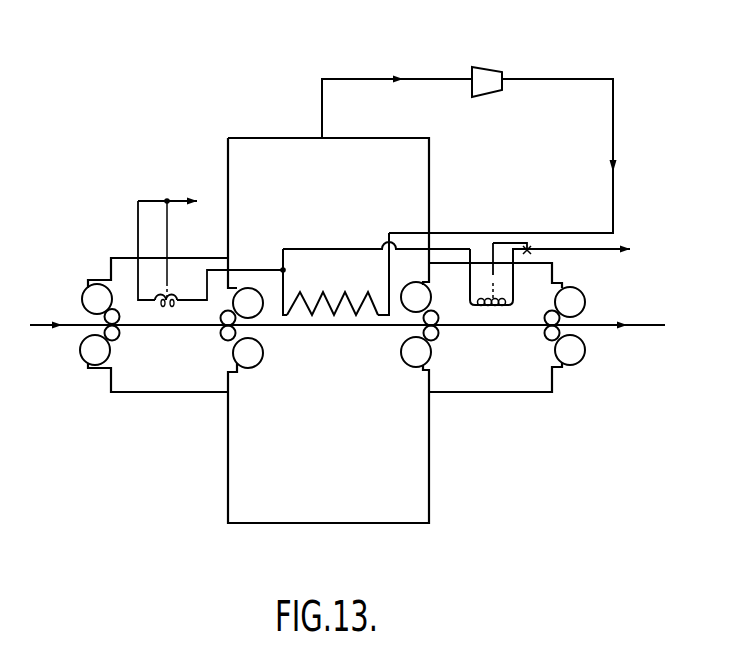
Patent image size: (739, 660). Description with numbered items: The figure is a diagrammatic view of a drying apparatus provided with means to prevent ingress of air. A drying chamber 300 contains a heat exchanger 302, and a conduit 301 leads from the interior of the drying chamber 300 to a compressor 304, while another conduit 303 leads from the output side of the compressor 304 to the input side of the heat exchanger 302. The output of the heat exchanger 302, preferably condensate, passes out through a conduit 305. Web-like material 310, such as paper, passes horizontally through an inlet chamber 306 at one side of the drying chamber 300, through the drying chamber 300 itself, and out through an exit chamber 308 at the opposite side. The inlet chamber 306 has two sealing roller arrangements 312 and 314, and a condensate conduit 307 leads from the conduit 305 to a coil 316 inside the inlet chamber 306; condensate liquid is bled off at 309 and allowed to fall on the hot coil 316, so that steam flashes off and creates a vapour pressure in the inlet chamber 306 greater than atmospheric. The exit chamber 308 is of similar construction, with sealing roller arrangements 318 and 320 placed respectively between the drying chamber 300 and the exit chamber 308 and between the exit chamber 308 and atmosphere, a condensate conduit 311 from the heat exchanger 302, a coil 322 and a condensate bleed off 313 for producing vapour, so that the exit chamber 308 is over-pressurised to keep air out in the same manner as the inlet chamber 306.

The drying chamber 300 is at (430, 192).
The conduit 301 is at (350, 78).
The heat exchanger 302 is at (334, 316).
The conduit 303 is at (613, 193).
The compressor 304 is at (495, 68).
The conduit 305 is at (287, 282).
The inlet chamber 306 is at (163, 393).
The condensate conduit 307 is at (250, 268).
The exit chamber 308 is at (508, 395).
The condensate bleed off 309 is at (168, 282).
The web-like material 310 is at (43, 323).
The condensate conduit 311 is at (457, 252).
The sealing roller arrangement 312 is at (78, 352).
The condensate bleed off 313 is at (493, 275).
The sealing roller arrangement 314 is at (222, 350).
The coil 316 is at (173, 312).
The sealing roller arrangement 318 is at (435, 347).
The sealing roller arrangement 320 is at (590, 352).
The coil 322 is at (500, 310).